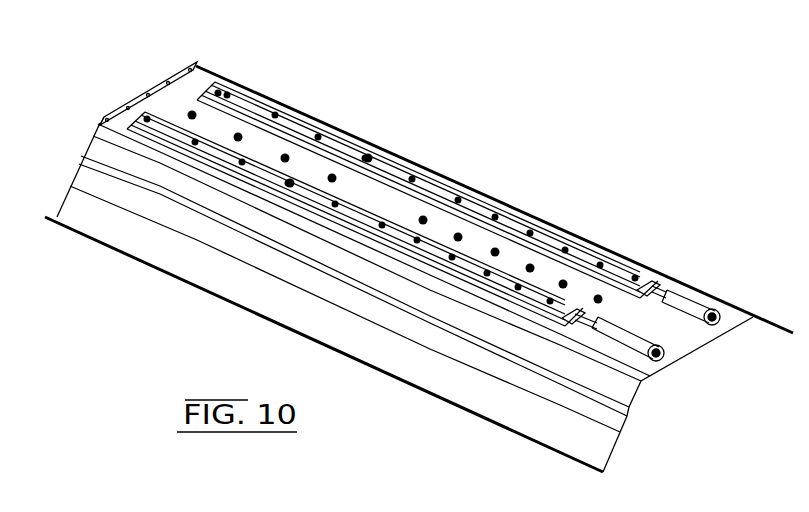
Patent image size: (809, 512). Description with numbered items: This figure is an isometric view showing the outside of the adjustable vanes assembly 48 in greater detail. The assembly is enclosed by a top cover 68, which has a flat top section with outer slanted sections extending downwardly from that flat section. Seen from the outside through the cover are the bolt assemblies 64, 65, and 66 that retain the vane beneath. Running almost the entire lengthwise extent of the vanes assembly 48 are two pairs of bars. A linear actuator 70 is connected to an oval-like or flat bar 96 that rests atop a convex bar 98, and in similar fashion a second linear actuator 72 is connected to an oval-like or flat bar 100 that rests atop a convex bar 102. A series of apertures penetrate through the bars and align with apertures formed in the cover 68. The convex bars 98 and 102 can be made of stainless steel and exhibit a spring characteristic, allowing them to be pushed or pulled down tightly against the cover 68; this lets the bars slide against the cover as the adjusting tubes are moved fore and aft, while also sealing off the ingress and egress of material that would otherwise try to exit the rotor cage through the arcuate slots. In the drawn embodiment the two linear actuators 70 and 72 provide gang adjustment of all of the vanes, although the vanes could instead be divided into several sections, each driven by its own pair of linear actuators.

The adjustable vanes assembly 48 is at (507, 165).
The bolt assembly 64 is at (290, 183).
The bolt assembly 65 is at (332, 178).
The bolt assembly 66 is at (368, 158).
The top cover 68 is at (632, 367).
The linear actuator 70 is at (632, 338).
The linear actuator 72 is at (683, 307).
The flat bar 96 is at (140, 100).
The convex bar 98 is at (103, 122).
The flat bar 100 is at (245, 108).
The convex bar 102 is at (205, 85).